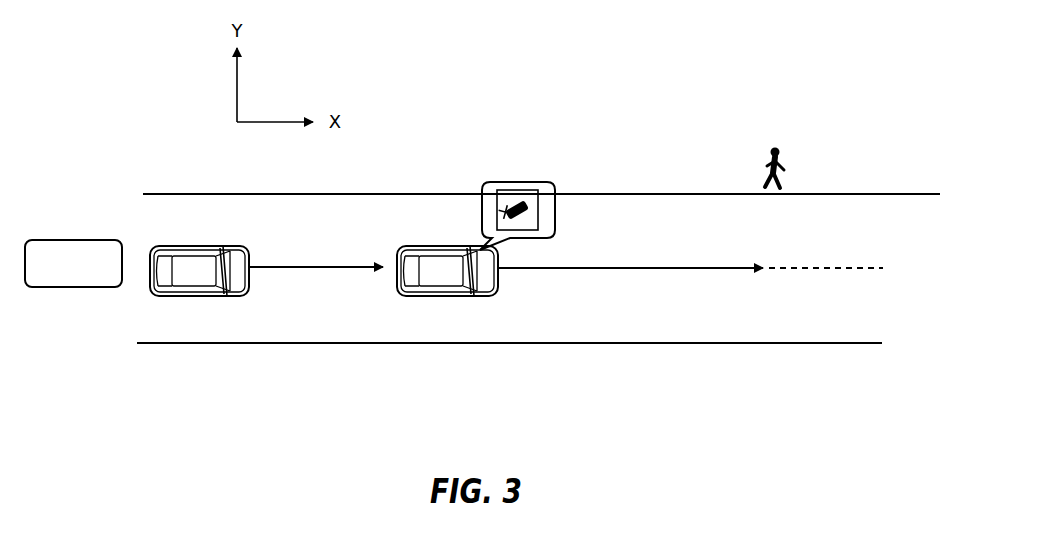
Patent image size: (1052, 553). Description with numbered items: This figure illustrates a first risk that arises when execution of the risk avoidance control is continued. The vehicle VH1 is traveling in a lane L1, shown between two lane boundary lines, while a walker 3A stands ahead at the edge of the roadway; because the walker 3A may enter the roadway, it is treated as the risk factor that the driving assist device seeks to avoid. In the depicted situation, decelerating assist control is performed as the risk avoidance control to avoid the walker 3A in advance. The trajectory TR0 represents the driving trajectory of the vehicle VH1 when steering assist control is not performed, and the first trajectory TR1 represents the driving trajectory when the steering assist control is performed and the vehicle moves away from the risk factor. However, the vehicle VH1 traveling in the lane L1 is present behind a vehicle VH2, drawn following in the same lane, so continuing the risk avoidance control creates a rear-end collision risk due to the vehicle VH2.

The vehicle VH1 is at (445, 250).
The vehicle VH2 is at (198, 250).
The walker 3A is at (781, 160).
The lane L1 is at (73, 263).
The trajectory TR0 is at (852, 267).
The first trajectory TR1 is at (630, 292).